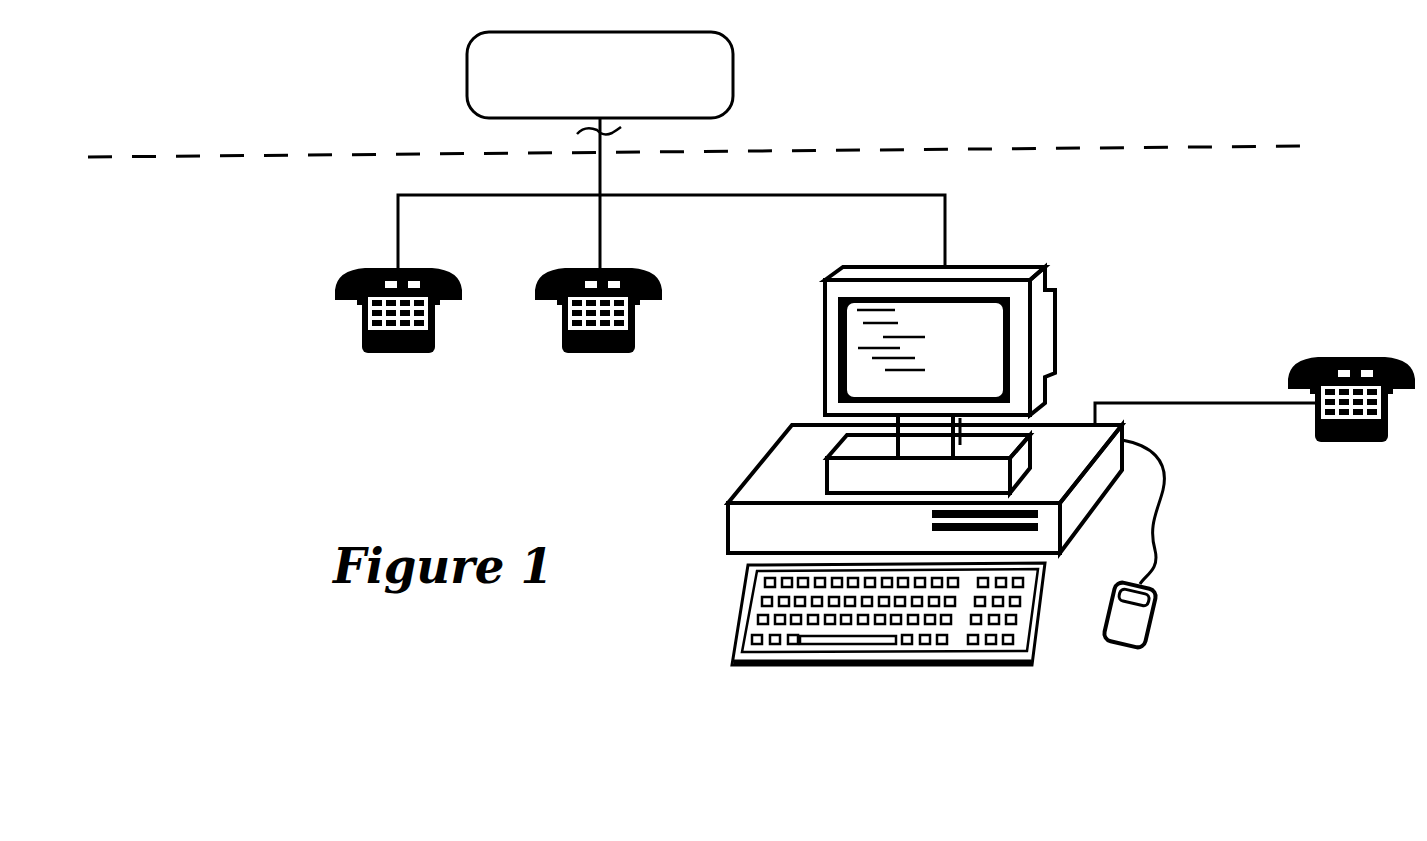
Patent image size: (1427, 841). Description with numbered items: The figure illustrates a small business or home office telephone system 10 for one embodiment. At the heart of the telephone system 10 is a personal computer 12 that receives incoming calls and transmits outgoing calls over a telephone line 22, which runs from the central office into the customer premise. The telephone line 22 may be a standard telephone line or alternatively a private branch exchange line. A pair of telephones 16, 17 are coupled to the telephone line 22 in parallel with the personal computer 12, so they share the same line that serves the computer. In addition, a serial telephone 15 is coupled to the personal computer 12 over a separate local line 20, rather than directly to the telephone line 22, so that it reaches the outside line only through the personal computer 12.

The telephone system 10 is at (1056, 65).
The personal computer 12 is at (1000, 262).
The serial telephone 15 is at (1355, 348).
The telephone 16 is at (412, 263).
The telephone 17 is at (610, 257).
The local line 20 is at (1195, 398).
The telephone line 22 is at (810, 187).